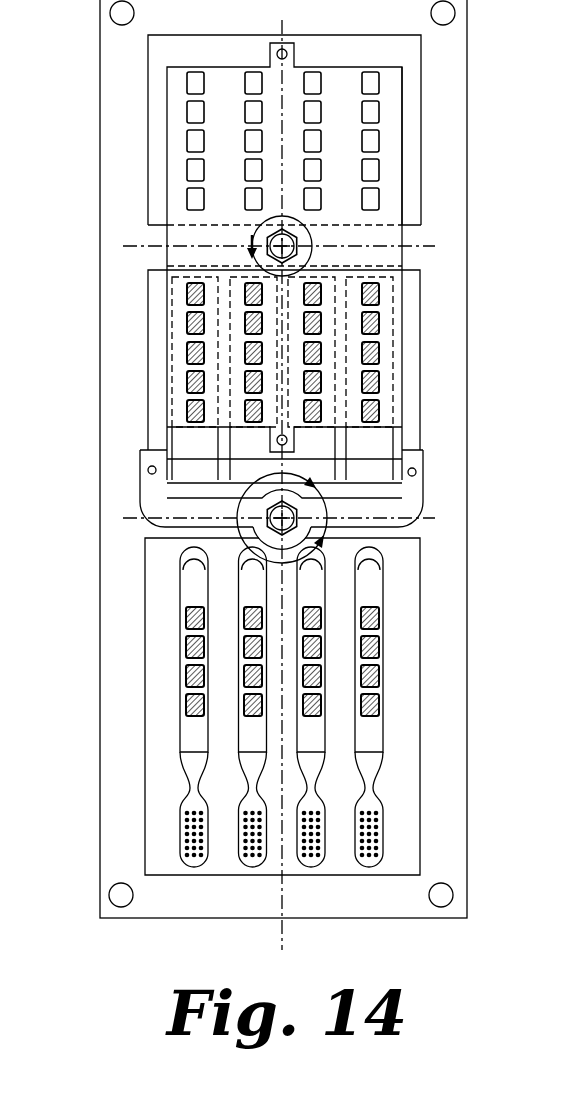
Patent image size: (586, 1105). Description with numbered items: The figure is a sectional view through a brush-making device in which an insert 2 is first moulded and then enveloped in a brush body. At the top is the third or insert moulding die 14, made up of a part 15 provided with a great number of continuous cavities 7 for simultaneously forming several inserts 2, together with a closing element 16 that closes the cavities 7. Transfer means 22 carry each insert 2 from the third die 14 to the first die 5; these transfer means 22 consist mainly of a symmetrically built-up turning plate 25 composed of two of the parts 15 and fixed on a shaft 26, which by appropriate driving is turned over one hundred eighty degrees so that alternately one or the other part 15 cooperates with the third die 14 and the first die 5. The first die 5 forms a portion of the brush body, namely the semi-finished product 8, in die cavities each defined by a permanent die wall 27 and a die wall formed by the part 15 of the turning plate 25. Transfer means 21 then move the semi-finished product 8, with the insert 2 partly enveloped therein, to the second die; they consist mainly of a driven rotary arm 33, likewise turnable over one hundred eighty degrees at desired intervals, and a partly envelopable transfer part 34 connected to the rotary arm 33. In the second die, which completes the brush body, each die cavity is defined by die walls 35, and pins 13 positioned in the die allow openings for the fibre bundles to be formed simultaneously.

The insert 2 is at (190, 408).
The first die 5 is at (145, 315).
The cavities 7 is at (190, 200).
The semi-finished product 8 is at (176, 590).
The pins 13 is at (185, 841).
The third die 14 is at (146, 90).
The part 15 is at (180, 61).
The closing element 16 is at (410, 98).
The transfer means 21 is at (240, 522).
The transfer means 22 is at (254, 259).
The turning plate 25 is at (406, 163).
The shaft 26 is at (302, 238).
The die wall 27 is at (320, 450).
The rotary arm 33 is at (165, 498).
The transfer part 34 is at (190, 463).
The die wall 35 is at (327, 573).